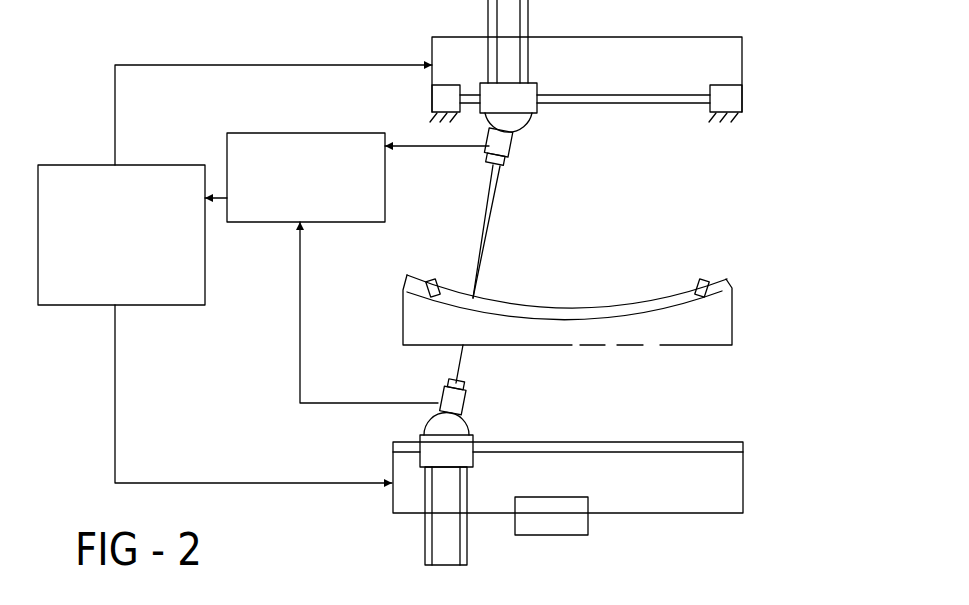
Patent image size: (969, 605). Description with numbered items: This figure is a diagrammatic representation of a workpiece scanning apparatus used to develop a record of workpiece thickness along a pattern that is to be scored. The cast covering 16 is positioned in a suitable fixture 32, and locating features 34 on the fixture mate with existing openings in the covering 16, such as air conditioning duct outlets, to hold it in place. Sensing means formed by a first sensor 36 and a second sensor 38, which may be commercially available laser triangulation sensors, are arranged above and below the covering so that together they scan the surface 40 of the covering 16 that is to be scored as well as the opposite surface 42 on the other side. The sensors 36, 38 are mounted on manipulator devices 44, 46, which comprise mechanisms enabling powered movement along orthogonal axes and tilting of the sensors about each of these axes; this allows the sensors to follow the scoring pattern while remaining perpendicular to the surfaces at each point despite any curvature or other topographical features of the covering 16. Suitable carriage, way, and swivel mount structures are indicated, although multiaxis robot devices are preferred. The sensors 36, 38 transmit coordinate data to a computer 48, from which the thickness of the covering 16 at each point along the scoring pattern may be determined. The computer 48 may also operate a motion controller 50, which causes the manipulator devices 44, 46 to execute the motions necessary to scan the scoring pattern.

The cast covering 16 is at (608, 302).
The fixture 32 is at (736, 322).
The locating features 34 is at (432, 280).
The first sensor 36 is at (513, 142).
The second sensor 38 is at (466, 404).
The surface 40 is at (522, 305).
The opposite surface 42 is at (640, 317).
The manipulator device 44 is at (745, 62).
The manipulator device 46 is at (746, 481).
The computer 48 is at (306, 143).
The motion controller 50 is at (148, 164).